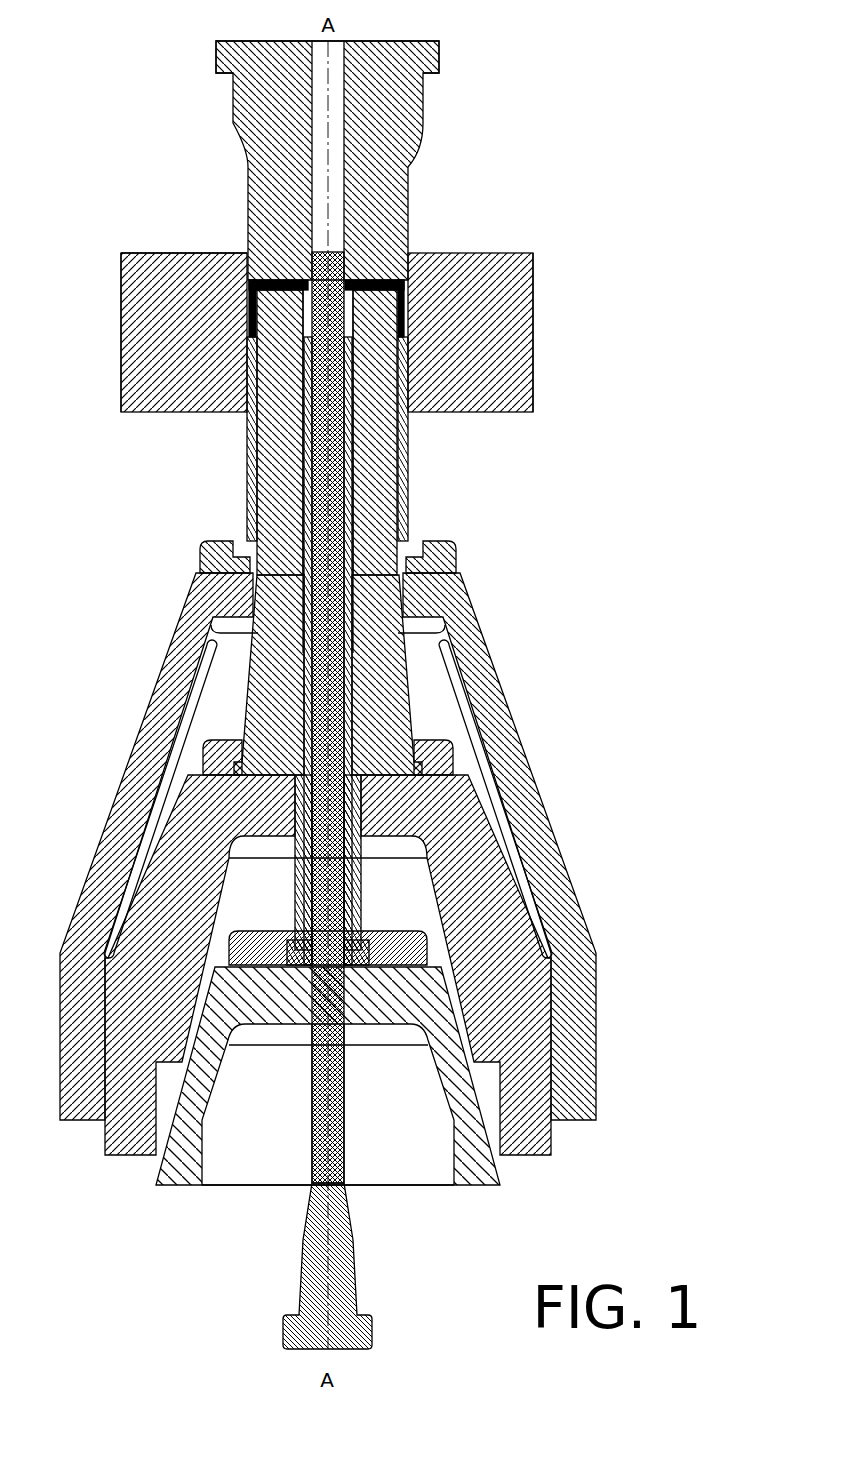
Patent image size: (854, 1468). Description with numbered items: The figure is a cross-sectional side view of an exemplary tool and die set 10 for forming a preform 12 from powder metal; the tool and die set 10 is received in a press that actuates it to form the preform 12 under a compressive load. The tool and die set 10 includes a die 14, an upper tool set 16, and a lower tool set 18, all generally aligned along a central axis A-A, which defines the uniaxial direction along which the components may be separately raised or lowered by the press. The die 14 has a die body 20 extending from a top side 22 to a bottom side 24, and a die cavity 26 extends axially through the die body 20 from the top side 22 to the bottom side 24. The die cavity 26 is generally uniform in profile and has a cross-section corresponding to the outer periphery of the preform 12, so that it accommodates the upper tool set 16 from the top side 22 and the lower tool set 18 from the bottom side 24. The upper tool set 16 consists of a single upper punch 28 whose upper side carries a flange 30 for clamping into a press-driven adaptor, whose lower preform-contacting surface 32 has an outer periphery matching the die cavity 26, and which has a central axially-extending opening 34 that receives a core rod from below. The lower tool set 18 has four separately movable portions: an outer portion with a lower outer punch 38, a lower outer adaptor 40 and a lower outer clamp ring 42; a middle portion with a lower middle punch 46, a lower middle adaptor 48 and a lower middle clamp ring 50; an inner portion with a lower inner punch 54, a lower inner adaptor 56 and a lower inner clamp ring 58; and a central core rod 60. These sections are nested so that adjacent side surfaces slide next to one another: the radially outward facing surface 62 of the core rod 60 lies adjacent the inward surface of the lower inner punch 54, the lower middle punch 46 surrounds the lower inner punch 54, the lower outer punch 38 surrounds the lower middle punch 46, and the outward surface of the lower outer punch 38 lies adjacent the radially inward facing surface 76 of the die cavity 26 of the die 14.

The tool and die set 10 is at (661, 116).
The preform 12 is at (383, 280).
The die 14 is at (512, 339).
The upper tool set 16 is at (465, 151).
The lower tool set 18 is at (632, 619).
The die body 20 is at (512, 396).
The top side 22 is at (168, 252).
The bottom side 24 is at (148, 413).
The die cavity 26 is at (252, 380).
The upper punch 28 is at (240, 110).
The flange 30 is at (420, 55).
The lower preform-contacting surface 32 is at (249, 286).
The central axially-extending opening 34 is at (323, 184).
The lower outer punch 38 is at (254, 493).
The lower outer adaptor 40 is at (204, 597).
The lower outer clamp ring 42 is at (208, 555).
The lower middle punch 46 is at (260, 702).
The lower middle adaptor 48 is at (191, 823).
The lower middle clamp ring 50 is at (204, 760).
The lower inner punch 54 is at (356, 909).
The lower inner adaptor 56 is at (455, 1067).
The lower inner clamp ring 58 is at (411, 946).
The core rod 60 is at (342, 1270).
The radially outward facing surface 62 is at (311, 1097).
The radially inward facing surface 76 is at (404, 380).